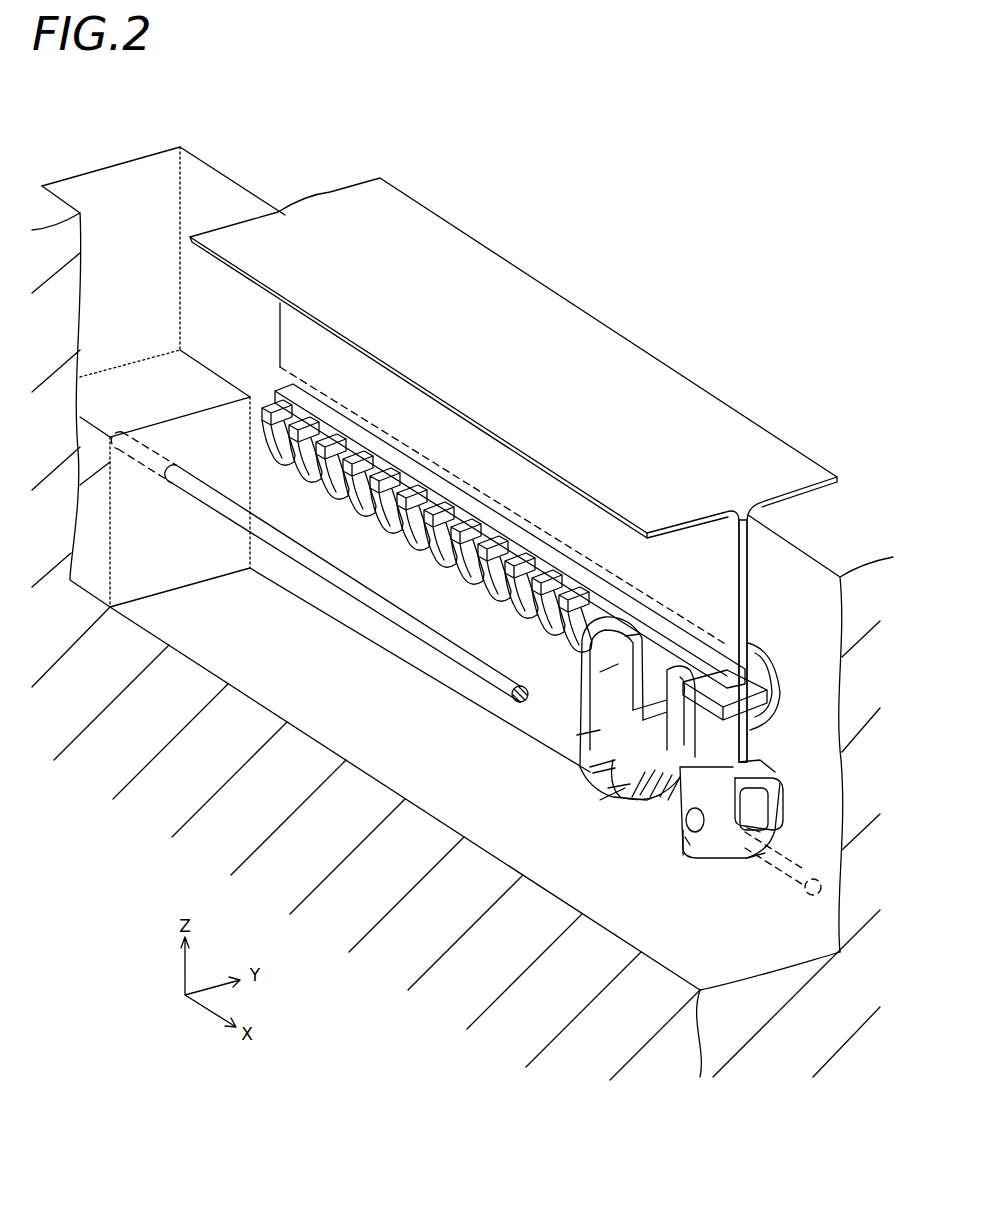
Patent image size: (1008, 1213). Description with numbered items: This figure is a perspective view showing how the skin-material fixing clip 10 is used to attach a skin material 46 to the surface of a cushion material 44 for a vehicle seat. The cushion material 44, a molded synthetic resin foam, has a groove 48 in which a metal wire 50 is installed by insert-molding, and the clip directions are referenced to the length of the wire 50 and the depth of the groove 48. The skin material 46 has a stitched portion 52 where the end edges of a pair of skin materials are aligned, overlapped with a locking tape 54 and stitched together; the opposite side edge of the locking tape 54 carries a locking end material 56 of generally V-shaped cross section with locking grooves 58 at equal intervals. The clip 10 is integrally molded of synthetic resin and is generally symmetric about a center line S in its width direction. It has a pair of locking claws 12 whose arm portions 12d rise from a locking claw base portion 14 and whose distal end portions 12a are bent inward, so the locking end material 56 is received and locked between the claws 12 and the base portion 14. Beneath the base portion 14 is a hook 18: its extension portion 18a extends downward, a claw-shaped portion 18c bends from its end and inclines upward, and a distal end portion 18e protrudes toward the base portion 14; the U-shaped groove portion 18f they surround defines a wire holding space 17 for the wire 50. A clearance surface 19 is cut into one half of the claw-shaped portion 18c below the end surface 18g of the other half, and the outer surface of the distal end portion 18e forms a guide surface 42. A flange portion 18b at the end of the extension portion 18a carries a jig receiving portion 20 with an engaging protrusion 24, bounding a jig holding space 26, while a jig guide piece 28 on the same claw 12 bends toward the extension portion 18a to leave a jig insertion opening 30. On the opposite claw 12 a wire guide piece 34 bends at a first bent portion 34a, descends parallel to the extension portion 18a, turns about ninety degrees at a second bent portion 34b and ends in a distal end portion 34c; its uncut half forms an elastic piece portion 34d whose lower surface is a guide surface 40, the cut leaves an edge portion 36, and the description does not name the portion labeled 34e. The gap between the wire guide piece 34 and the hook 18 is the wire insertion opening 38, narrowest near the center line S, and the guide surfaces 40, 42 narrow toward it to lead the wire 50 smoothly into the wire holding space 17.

The skin-material fixing clip 10 is at (786, 643).
The locking claws 12 is at (593, 687).
The distal end portions of the locking claws 12a is at (600, 672).
The arm portions 12d is at (625, 636).
The locking claw base portion 14 is at (748, 700).
The wire holding space 17 is at (707, 820).
The hook 18 is at (710, 840).
The extension portion 18a is at (747, 808).
The flange portion 18b is at (747, 860).
The claw-shaped portion 18c is at (685, 837).
The distal end portion of the claw-shaped portion 18e is at (650, 807).
The U-shaped groove portion 18f is at (680, 830).
The end surface 18g is at (652, 797).
The clearance surface 19 is at (637, 805).
The jig receiving portion 20 is at (770, 794).
The engaging protrusion 24 is at (747, 788).
The jig holding space 26 is at (747, 828).
The jig guide piece 28 is at (770, 717).
The jig insertion opening 30 is at (760, 762).
The wire guide piece 34 is at (590, 748).
The first bent portion 34a is at (590, 767).
The second bent portion 34b is at (600, 800).
The distal end portion of the wire guide piece 34c is at (593, 773).
The elastic piece portion 34d is at (608, 788).
The holding arm 34e is at (577, 735).
The edge portion 36 is at (620, 802).
The wire insertion opening 38 is at (657, 800).
The guide surface 40 is at (647, 800).
The guide surface 42 is at (667, 830).
The cushion material 44 is at (100, 152).
The skin material 46 is at (548, 388).
The groove 48 is at (147, 180).
The wire 50 is at (368, 597).
The stitched portion 52 is at (672, 605).
The locking tape 54 is at (733, 645).
The locking end material 56 is at (393, 483).
The locking grooves 58 is at (341, 480).
The center line S is at (640, 592).